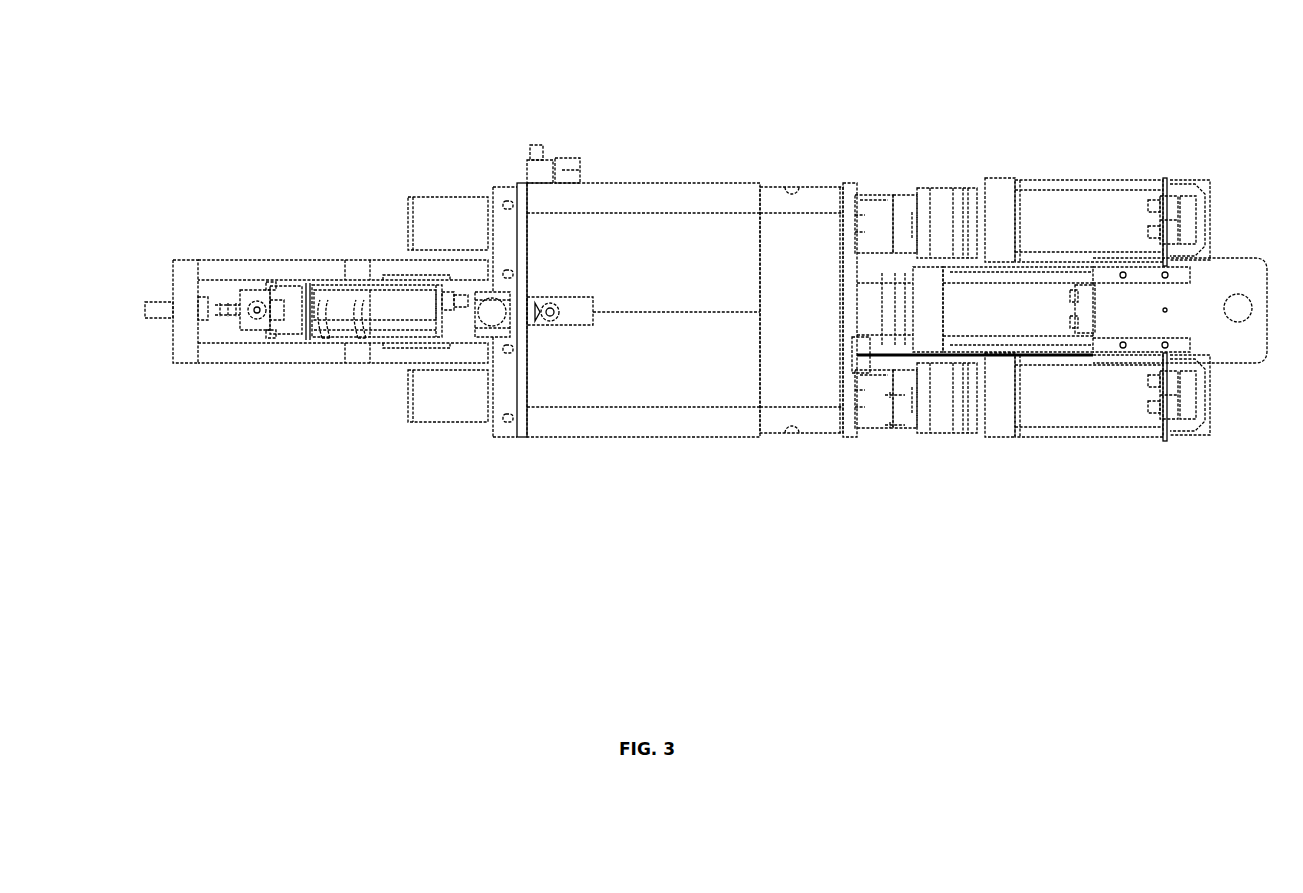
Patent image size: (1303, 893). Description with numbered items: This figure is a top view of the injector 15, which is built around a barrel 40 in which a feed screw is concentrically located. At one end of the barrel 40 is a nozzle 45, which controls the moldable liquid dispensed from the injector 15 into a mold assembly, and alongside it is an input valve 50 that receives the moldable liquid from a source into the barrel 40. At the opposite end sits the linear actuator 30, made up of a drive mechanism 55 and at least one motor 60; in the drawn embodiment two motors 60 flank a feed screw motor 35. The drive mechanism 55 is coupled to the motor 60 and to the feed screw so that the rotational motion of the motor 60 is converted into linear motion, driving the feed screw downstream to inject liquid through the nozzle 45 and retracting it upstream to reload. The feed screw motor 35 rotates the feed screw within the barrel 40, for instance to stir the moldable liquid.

The injector 15 is at (295, 597).
The linear actuator 30 is at (494, 140).
The feed screw motor 35 is at (985, 314).
The barrel 40 is at (272, 348).
The nozzle 45 is at (220, 276).
The input valve 50 is at (472, 350).
The drive mechanism 55 is at (860, 436).
The motor 60 is at (1058, 236).